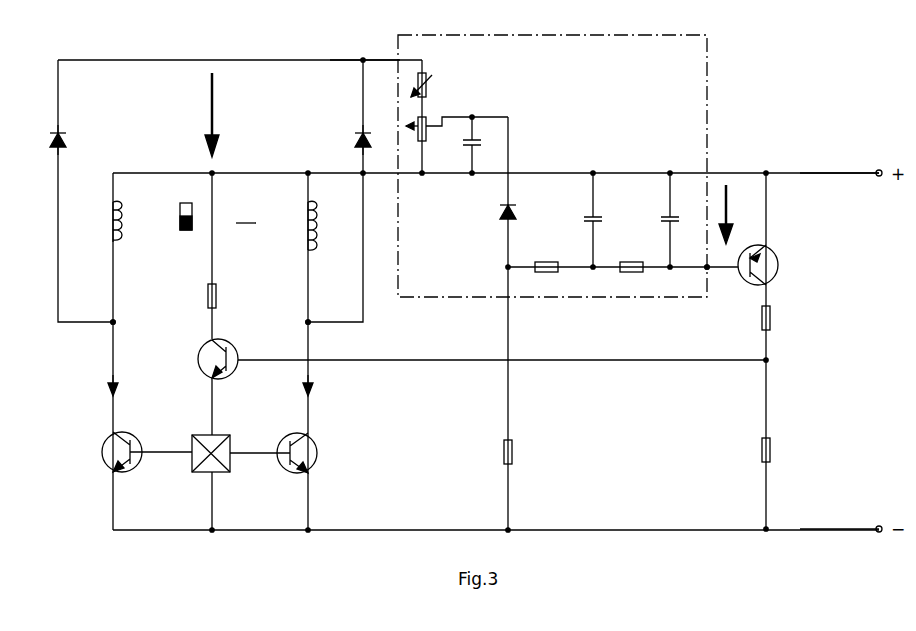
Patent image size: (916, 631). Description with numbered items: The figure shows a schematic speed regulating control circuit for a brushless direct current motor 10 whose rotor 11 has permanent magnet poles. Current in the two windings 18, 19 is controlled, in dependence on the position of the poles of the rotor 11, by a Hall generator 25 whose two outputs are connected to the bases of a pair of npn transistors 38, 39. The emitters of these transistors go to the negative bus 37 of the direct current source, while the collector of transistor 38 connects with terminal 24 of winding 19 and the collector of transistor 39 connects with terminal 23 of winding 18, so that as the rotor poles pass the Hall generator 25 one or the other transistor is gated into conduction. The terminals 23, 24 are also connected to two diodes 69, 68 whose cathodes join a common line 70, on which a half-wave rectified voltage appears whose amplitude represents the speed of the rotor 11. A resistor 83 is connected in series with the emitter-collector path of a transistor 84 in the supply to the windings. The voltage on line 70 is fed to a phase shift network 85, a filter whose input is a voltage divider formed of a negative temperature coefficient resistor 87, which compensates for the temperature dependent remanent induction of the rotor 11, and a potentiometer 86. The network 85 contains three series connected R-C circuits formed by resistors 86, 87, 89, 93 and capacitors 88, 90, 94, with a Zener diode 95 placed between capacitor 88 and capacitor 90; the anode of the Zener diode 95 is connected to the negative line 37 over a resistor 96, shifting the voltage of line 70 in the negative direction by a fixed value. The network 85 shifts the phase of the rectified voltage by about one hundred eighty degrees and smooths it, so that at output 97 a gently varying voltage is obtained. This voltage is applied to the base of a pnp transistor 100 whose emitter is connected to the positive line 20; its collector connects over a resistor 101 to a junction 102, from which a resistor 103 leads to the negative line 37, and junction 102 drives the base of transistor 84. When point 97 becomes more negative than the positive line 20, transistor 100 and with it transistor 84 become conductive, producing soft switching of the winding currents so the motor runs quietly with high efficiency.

The motor 10 is at (247, 214).
The rotor 11 is at (180, 212).
The winding 18 is at (310, 246).
The winding 19 is at (114, 240).
The positive terminal 20 is at (848, 173).
The terminal 23 is at (311, 324).
The terminal 24 is at (115, 323).
The Hall generator 25 is at (230, 441).
The negative bus 37 is at (834, 529).
The npn transistor 38 is at (110, 442).
The npn transistor 39 is at (307, 441).
The diode 68 is at (63, 145).
The diode 69 is at (358, 143).
The common line 70 is at (363, 60).
The resistor 83 is at (217, 298).
The transistor 84 is at (228, 347).
The phase shift network 85 is at (632, 35).
The potentiometer 86 is at (427, 137).
The negative temperature coefficient resistor 87 is at (428, 80).
The capacitor 88 is at (476, 142).
The resistor 89 is at (549, 262).
The capacitor 90 is at (589, 219).
The resistor 93 is at (631, 262).
The capacitor 94 is at (666, 219).
The Zener diode 95 is at (500, 218).
The resistor 96 is at (512, 450).
The output 97 is at (708, 269).
The pnp transistor 100 is at (778, 267).
The resistor 101 is at (770, 324).
The junction 102 is at (770, 361).
The resistor 103 is at (770, 454).